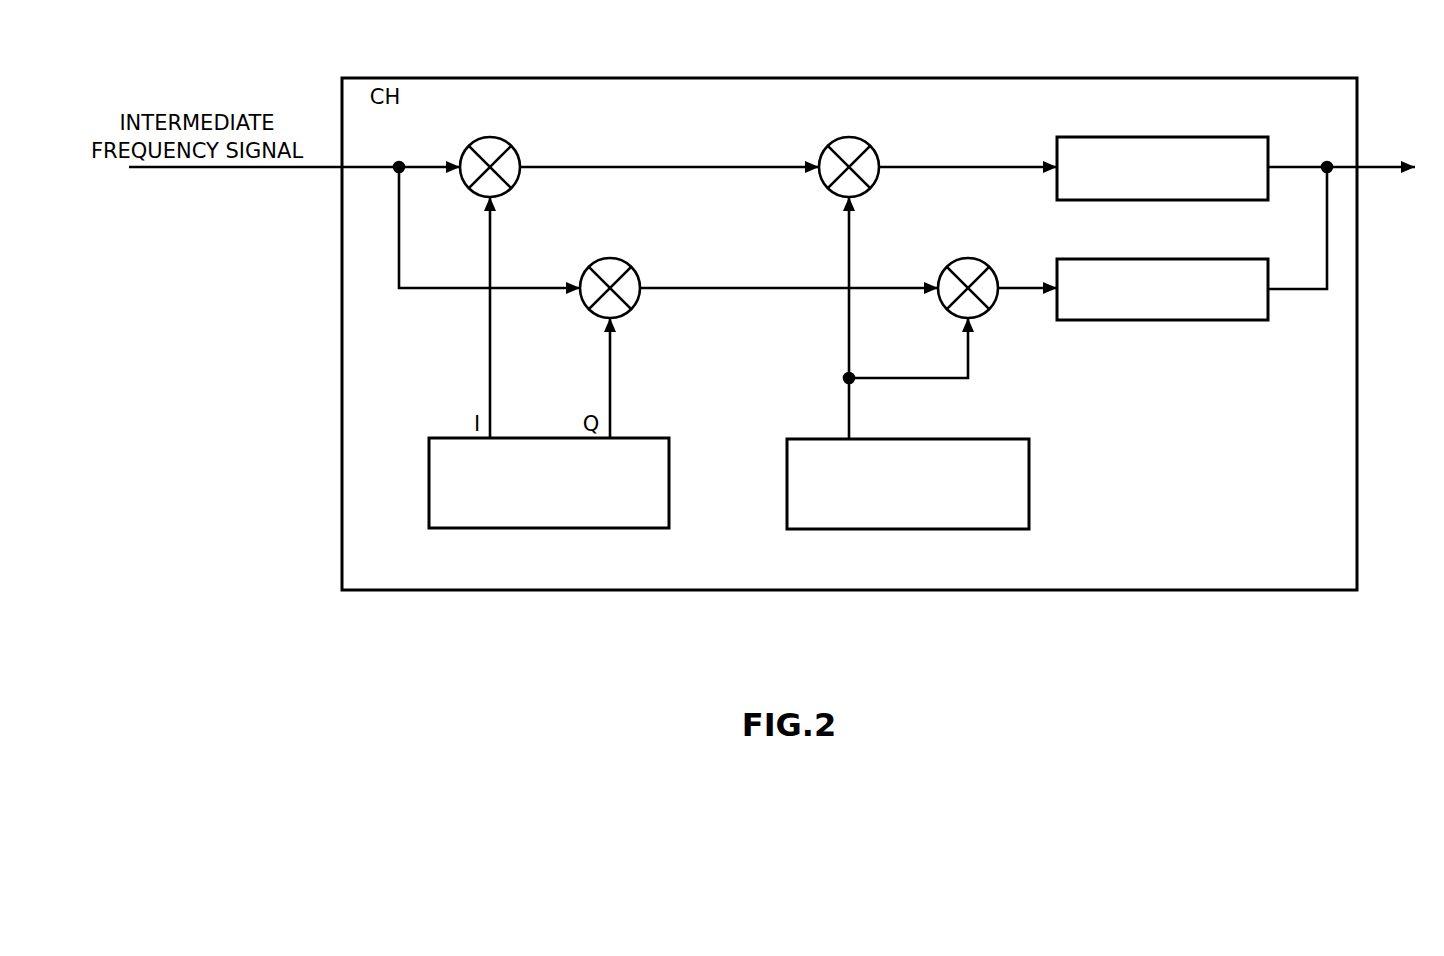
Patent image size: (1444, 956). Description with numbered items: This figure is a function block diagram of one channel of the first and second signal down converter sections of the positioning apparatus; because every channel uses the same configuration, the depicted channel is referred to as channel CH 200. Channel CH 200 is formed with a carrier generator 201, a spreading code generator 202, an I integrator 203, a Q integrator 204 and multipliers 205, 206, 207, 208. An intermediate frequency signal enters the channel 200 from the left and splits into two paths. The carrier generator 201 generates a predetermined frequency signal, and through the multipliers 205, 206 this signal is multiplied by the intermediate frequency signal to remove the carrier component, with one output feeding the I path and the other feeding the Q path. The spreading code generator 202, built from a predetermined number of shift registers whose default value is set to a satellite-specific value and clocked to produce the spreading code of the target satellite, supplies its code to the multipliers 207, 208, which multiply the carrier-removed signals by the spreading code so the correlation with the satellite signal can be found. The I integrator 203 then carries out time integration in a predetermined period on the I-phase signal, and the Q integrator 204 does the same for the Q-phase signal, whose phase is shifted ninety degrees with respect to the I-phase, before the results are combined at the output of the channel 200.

The channel CH 200 is at (1160, 76).
The carrier generator 201 is at (636, 437).
The spreading code generator 202 is at (994, 438).
The I integrator 203 is at (1210, 135).
The Q integrator 204 is at (1208, 257).
The multiplier 205 is at (518, 150).
The multiplier 206 is at (637, 271).
The multiplier 207 is at (877, 150).
The multiplier 208 is at (996, 271).